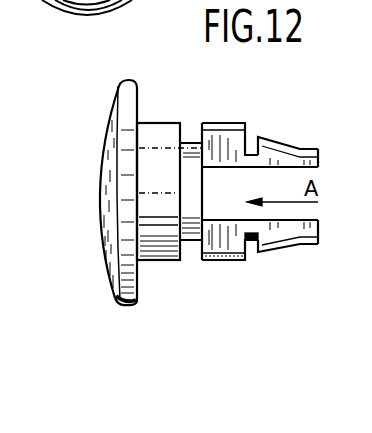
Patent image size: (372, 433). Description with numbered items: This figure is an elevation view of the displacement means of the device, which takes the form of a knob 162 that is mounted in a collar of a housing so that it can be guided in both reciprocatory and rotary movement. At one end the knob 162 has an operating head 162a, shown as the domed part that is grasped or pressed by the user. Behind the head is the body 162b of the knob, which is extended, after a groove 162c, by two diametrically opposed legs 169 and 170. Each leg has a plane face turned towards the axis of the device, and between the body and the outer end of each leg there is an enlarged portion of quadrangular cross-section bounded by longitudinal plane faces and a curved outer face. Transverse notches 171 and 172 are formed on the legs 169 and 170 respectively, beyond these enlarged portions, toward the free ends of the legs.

The knob 162 is at (87, 174).
The operating head 162a is at (90, 73).
The body 162b is at (158, 262).
The groove 162c is at (190, 133).
The leg 169 is at (219, 138).
The leg 170 is at (223, 242).
The transverse notch 171 is at (253, 143).
The transverse notch 172 is at (248, 243).